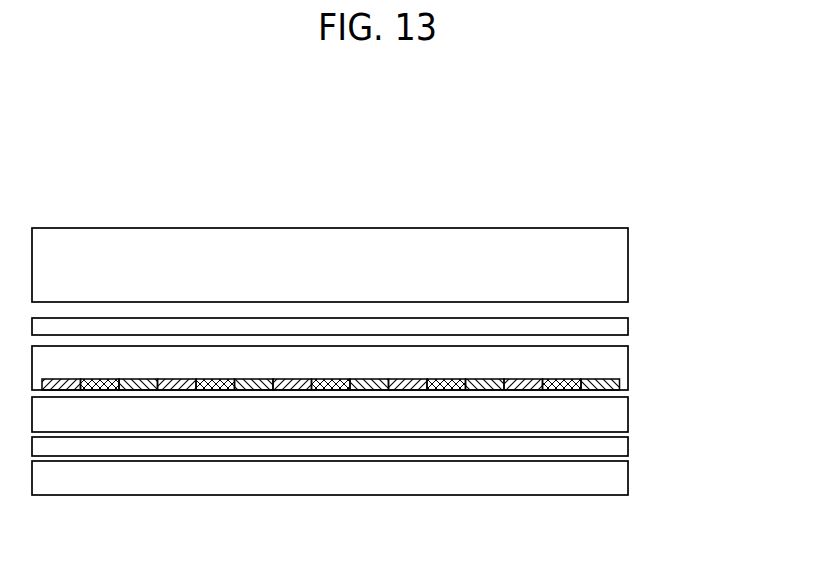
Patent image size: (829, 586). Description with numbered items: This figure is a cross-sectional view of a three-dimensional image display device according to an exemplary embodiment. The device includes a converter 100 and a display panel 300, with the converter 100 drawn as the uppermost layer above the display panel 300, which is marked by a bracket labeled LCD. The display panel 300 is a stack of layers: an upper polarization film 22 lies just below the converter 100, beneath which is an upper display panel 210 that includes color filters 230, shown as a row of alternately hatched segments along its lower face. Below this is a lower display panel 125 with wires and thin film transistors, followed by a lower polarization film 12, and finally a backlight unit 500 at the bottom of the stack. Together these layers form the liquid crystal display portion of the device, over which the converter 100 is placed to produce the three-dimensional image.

The converter 100 is at (415, 258).
The upper polarization film 22 is at (322, 325).
The upper display panel 210 is at (220, 362).
The color filters 230 is at (182, 392).
The lower display panel 125 is at (288, 410).
The lower polarization film 12 is at (386, 448).
The backlight unit 500 is at (491, 476).
The display panel 300 is at (636, 318).